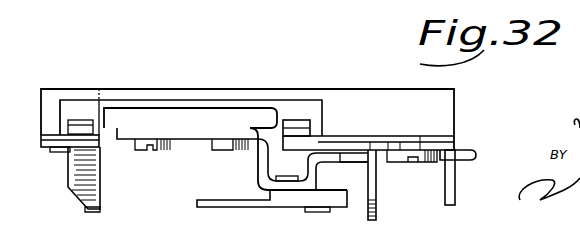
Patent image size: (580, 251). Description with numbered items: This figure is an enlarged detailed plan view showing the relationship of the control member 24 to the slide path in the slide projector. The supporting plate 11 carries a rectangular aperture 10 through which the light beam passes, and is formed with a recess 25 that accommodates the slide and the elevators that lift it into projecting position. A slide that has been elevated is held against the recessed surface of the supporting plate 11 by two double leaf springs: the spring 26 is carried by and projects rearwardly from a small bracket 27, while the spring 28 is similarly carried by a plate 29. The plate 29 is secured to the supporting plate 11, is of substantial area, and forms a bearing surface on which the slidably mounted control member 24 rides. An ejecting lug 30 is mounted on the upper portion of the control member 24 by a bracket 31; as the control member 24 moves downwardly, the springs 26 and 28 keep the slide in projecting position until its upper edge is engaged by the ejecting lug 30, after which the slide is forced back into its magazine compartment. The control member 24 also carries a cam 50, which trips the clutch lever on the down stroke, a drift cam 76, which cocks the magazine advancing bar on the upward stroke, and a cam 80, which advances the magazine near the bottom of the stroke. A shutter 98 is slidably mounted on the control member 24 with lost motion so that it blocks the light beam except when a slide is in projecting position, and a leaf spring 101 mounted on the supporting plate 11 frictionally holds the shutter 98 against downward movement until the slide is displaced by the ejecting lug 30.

The rectangular aperture 10 is at (292, 102).
The supporting plate 11 is at (80, 88).
The control member 24 is at (345, 147).
The recess 25 is at (71, 108).
The spring 26 is at (88, 122).
The small bracket 27 is at (45, 137).
The spring 28 is at (293, 120).
The plate 29 is at (270, 153).
The ejecting lug 30 is at (200, 115).
The bracket 31 is at (200, 134).
The cam 50 is at (467, 149).
The drift cam 76 is at (375, 206).
The cam 80 is at (372, 175).
The shutter 98 is at (200, 201).
The leaf spring 101 is at (90, 192).